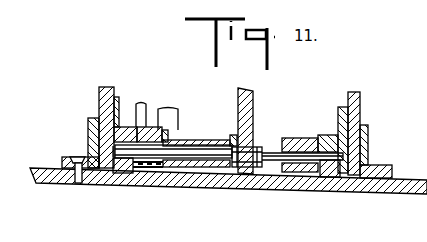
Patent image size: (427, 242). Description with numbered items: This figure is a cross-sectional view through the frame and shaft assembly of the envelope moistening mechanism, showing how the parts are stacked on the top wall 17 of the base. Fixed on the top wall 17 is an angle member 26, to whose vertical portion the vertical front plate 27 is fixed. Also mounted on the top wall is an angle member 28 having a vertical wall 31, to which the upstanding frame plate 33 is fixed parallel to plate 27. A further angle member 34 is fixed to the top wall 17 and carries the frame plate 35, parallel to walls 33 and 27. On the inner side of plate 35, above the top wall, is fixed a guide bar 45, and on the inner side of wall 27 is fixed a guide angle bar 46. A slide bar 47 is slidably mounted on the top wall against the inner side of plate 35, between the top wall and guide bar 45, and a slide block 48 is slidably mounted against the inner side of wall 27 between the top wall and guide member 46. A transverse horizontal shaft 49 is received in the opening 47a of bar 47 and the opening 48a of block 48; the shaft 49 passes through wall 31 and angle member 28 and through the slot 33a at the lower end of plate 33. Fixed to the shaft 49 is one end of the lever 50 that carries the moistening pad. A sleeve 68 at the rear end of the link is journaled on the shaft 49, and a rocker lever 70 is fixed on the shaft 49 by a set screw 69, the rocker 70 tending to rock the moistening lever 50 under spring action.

The top wall 17 is at (423, 186).
The angle member 26 is at (73, 129).
The vertical front plate 27 is at (105, 87).
The angle member 28 is at (227, 126).
The vertical wall 31 is at (226, 158).
The frame plate 33 is at (253, 95).
The slot 33a is at (244, 152).
The angle member 34 is at (380, 149).
The frame plate 35 is at (360, 93).
The guide bar 45 is at (336, 110).
The guide angle bar 46 is at (120, 106).
The slide bar 47 is at (337, 177).
The opening 47a is at (319, 183).
The slide block 48 is at (128, 166).
The opening 48a is at (131, 164).
The transverse horizontal shaft 49 is at (204, 160).
The lever 50 is at (296, 139).
The sleeve 68 is at (188, 139).
The set screw 69 is at (154, 165).
The rocker lever 70 is at (151, 126).